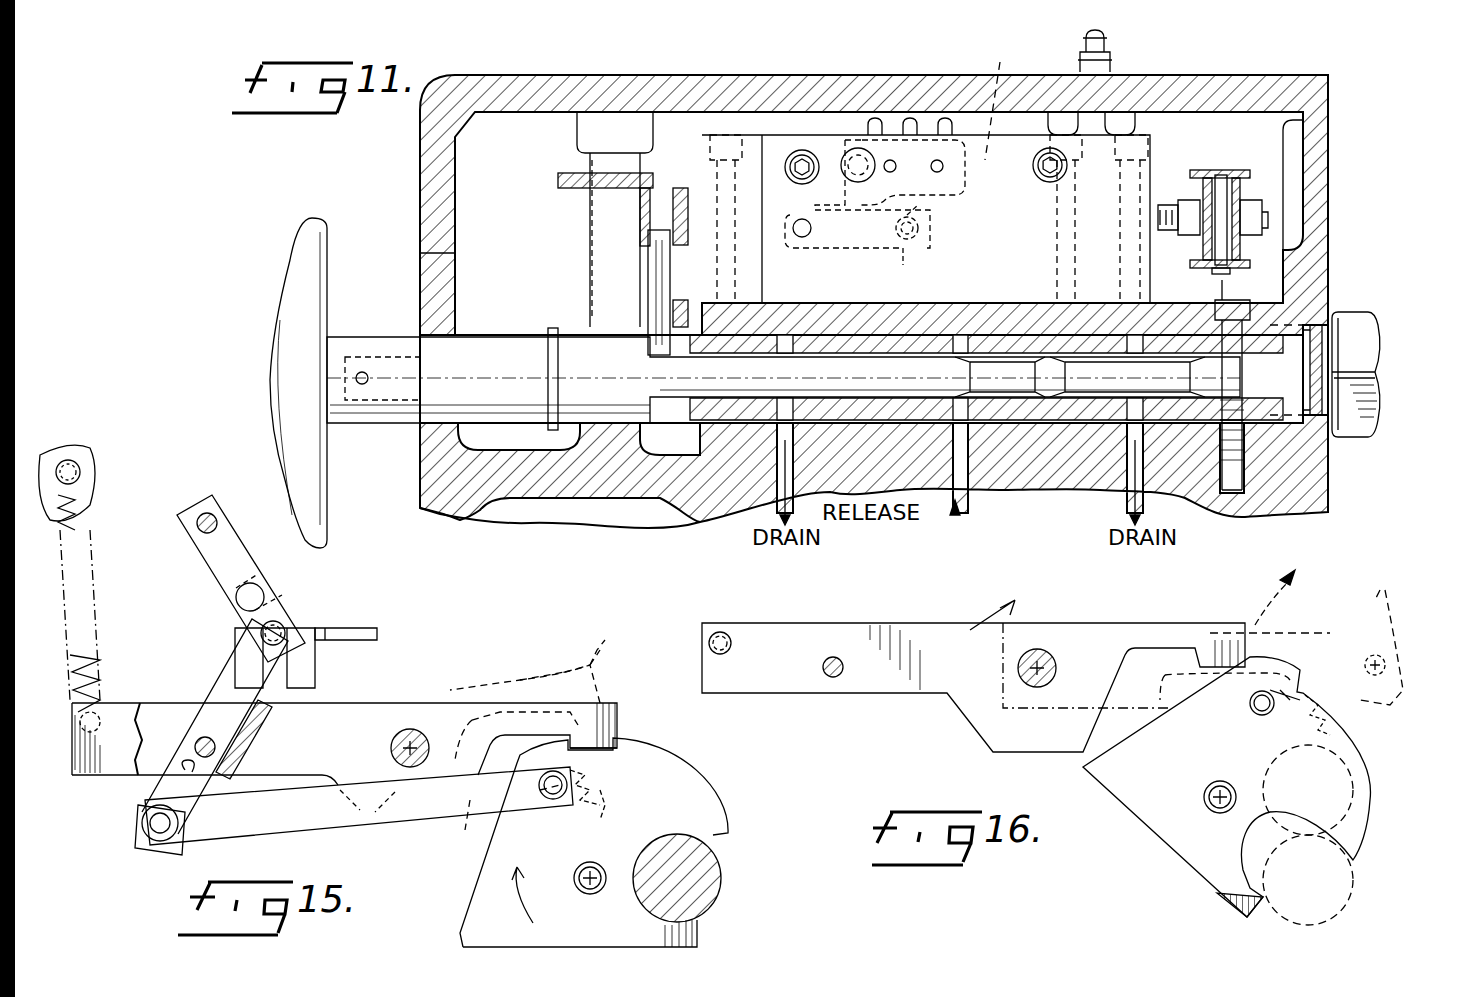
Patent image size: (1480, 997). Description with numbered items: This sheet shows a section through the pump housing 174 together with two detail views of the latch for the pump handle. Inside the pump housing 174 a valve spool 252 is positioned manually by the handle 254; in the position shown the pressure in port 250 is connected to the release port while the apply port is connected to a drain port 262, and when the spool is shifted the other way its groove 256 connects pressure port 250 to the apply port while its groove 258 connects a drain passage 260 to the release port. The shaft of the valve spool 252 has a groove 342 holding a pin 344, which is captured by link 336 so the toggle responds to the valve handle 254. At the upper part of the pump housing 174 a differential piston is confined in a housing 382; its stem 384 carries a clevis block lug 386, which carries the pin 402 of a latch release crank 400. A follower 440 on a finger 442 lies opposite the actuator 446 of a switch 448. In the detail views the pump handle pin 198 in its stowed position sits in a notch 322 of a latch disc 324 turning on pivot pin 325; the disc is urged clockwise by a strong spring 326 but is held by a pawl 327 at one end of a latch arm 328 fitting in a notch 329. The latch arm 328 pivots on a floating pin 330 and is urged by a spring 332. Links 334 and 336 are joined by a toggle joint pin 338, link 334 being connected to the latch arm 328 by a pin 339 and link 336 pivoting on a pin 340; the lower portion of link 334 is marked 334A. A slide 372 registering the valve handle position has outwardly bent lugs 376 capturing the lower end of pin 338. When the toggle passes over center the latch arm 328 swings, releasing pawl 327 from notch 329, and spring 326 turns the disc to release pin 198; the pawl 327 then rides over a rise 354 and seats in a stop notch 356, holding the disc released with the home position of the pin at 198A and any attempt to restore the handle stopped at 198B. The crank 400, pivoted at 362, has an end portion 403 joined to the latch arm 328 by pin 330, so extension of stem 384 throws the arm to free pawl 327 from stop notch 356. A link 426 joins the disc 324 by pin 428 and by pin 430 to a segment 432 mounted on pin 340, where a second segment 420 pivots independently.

In FIG. 11, the pump housing 174 is at (455, 505).
In FIG. 11, the valve handle 254 is at (315, 218).
In FIG. 11, the segment 432 is at (557, 180).
In FIG. 11, the segment 420 is at (578, 190).
In FIG. 11, the pin 344 is at (645, 262).
In FIG. 15, the pin 344 is at (262, 600).
In FIG. 11, the groove 342 is at (650, 362).
In FIG. 11, the housing 382 is at (981, 98).
In FIG. 11, the switch 448 is at (850, 190).
In FIG. 11, the finger 442 is at (812, 240).
In FIG. 11, the valve spool 252 is at (807, 365).
In FIG. 11, the follower 440 is at (928, 243).
In FIG. 11, the actuator 446 is at (925, 205).
In FIG. 11, the piston stem 384 is at (1172, 205).
In FIG. 11, the pin 402 is at (1226, 170).
In FIG. 11, the latch release crank 400 is at (1275, 168).
In FIG. 16, the latch release crank 400 is at (1385, 610).
In FIG. 11, the lug 386 is at (1258, 191).
In FIG. 11, the groove 258 is at (948, 368).
In FIG. 11, the groove 256 is at (1120, 368).
In FIG. 11, the drain passage 260 is at (785, 425).
In FIG. 11, the pressure port 250 is at (955, 420).
In FIG. 11, the drain port 262 is at (1135, 425).
In FIG. 15, the spring 332 is at (88, 505).
In FIG. 15, the pin 340 is at (197, 527).
In FIG. 15, the link 336 is at (210, 575).
In FIG. 15, the toggle joint pin 338 is at (285, 630).
In FIG. 15, the link 334 is at (228, 690).
In FIG. 15, the latch arm 328 is at (112, 720).
In FIG. 16, the latch arm 328 is at (830, 606).
In FIG. 15, the pin 339 is at (195, 748).
In FIG. 16, the pin 339 is at (835, 680).
In FIG. 15, the lugs 376 is at (312, 680).
In FIG. 15, the register slide 372 is at (378, 634).
In FIG. 15, the pin 330 is at (410, 730).
In FIG. 16, the pin 330 is at (1050, 665).
In FIG. 15, the pawl 327 is at (590, 655).
In FIG. 16, the pawl 327 is at (1225, 660).
In FIG. 15, the notch 329 is at (620, 745).
In FIG. 16, the notch 329 is at (1310, 722).
In FIG. 15, the latch disc 324 is at (720, 822).
In FIG. 16, the latch disc 324 is at (1185, 862).
In FIG. 15, the spring 326 is at (610, 805).
In FIG. 16, the spring 326 is at (1340, 710).
In FIG. 15, the pin 428 is at (550, 790).
In FIG. 15, the link 426 is at (300, 820).
In FIG. 15, the lever end 334A is at (145, 798).
In FIG. 15, the pin 430 is at (160, 823).
In FIG. 15, the pivot pin 325 is at (583, 890).
In FIG. 16, the pivot pin 325 is at (1208, 797).
In FIG. 15, the pump handle pin 198 is at (712, 886).
In FIG. 16, the end portion 403 is at (1030, 718).
In FIG. 16, the rise 354 is at (1295, 680).
In FIG. 16, the pivot 362 is at (1378, 655).
In FIG. 16, the stop notch 356 is at (1240, 700).
In FIG. 16, the position 198A is at (1278, 768).
In FIG. 16, the notch 322 is at (1240, 890).
In FIG. 16, the position 198B is at (1330, 915).